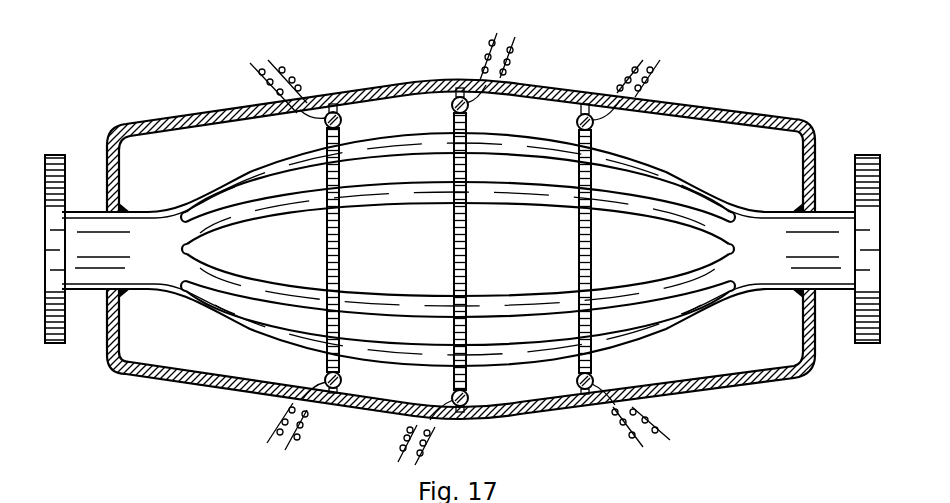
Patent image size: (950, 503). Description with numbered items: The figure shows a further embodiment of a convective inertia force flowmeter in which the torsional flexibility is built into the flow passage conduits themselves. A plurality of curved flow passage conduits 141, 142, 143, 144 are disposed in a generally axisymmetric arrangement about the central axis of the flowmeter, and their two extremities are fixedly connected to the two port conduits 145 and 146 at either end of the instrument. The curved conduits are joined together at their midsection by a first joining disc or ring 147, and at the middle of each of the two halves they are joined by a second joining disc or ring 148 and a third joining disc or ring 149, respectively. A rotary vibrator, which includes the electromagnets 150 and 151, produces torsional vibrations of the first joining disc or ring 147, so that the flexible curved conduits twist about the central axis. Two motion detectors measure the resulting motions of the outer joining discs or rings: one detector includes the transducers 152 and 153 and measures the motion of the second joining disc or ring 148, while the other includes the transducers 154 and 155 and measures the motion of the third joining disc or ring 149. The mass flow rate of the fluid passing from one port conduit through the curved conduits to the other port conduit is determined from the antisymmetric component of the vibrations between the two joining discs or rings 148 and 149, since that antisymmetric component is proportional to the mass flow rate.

The curved flow passage conduit 141 is at (380, 138).
The curved flow passage conduit 142 is at (405, 193).
The curved flow passage conduit 143 is at (402, 355).
The curved flow passage conduit 144 is at (375, 310).
The port conduit 145 is at (88, 243).
The port conduit 146 is at (837, 247).
The first joining disc or ring 147 is at (548, 140).
The second joining disc or ring 148 is at (310, 177).
The third joining disc or ring 149 is at (650, 170).
The electromagnet 150 is at (497, 158).
The electromagnet 151 is at (470, 402).
The transducer 152 is at (343, 110).
The transducer 153 is at (327, 378).
The transducer 154 is at (598, 118).
The transducer 155 is at (600, 383).